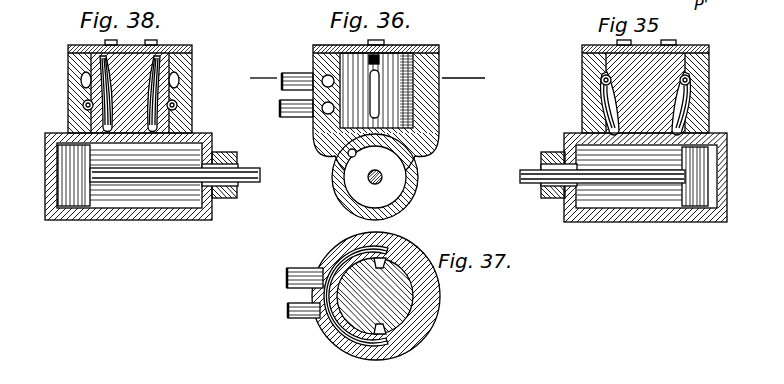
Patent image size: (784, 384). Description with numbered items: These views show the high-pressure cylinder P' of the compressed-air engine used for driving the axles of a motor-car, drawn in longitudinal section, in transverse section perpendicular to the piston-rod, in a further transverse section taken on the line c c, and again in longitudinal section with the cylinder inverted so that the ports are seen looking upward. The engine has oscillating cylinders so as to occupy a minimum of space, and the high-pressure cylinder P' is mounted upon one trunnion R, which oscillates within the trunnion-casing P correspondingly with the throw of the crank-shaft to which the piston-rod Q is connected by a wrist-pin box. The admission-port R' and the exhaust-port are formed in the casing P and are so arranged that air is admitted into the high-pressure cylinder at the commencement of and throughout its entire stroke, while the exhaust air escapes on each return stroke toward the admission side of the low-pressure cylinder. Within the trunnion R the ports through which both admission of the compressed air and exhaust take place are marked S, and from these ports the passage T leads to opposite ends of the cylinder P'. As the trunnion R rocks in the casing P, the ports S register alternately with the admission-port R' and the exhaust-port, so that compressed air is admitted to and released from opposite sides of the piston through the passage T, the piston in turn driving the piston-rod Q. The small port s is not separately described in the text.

In FIG. 38, the admission-port R' is at (130, 112).
In FIG. 36, the admission-port R' is at (307, 121).
In FIG. 37, the admission-port R' is at (321, 292).
In FIG. 38, the ports in the trunnions S is at (70, 83).
In FIG. 36, the ports in the trunnions S is at (418, 96).
In FIG. 37, the ports in the trunnions S is at (378, 332).
In FIG. 35, the ports in the trunnions S is at (591, 106).
In FIG. 38, the passage T is at (50, 137).
In FIG. 36, the passage T is at (350, 150).
In FIG. 36, the section line c c is at (367, 70).
In FIG. 36, the piston-rod Q is at (383, 176).
In FIG. 35, the piston-rod Q is at (624, 188).
In FIG. 36, the high-pressure cylinder P' is at (389, 130).
In FIG. 35, the high-pressure cylinder P' is at (634, 188).
In FIG. 37, the trunnion-casing P is at (382, 289).
In FIG. 37, the trunnion R is at (405, 296).
In FIG. 37, the small port s is at (397, 276).